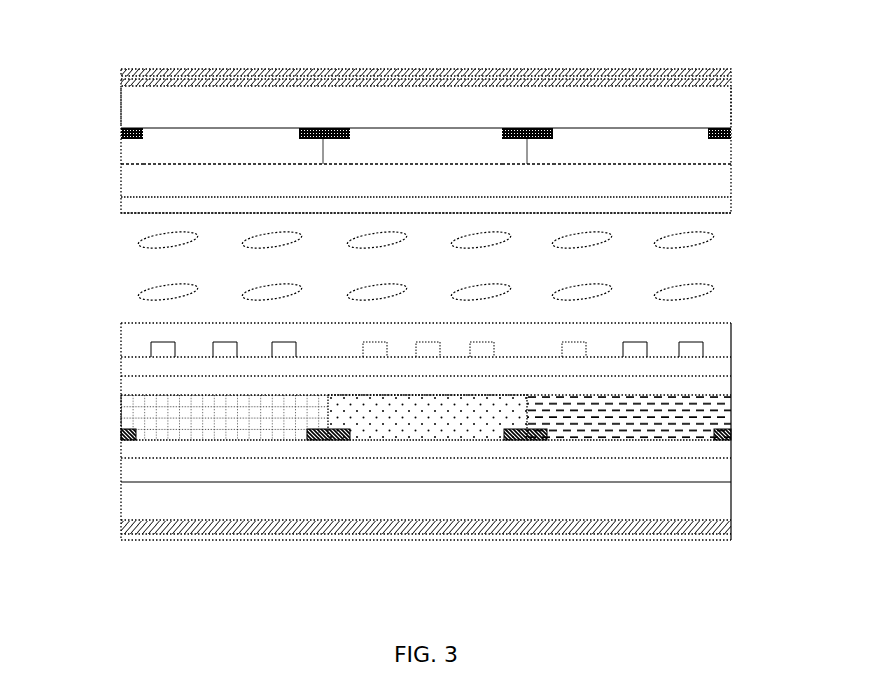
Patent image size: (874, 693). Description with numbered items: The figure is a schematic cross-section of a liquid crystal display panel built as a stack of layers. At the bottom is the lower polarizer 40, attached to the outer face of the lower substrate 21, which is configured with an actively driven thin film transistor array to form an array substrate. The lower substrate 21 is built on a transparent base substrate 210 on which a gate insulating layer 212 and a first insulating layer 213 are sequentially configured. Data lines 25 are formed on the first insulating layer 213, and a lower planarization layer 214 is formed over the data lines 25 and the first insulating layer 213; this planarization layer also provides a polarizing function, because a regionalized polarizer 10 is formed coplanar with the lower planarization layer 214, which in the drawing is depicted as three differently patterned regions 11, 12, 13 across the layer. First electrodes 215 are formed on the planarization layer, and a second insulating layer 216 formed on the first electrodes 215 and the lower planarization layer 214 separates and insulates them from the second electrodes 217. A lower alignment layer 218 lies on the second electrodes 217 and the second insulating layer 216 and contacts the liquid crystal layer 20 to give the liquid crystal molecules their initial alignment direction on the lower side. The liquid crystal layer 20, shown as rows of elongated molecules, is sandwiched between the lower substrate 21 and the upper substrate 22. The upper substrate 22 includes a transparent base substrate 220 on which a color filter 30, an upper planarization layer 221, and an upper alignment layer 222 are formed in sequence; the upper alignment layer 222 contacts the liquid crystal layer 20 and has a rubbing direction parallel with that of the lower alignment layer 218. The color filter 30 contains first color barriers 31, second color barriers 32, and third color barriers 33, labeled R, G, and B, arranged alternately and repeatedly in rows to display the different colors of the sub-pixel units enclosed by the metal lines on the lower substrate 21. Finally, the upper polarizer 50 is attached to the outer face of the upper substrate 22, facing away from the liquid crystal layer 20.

The regionalized polarizer 10 is at (493, 495).
The first light-emitting region (grid) 11 is at (183, 417).
The second light-emitting region (dots) 12 is at (400, 417).
The third light-emitting region (dashes) 13 is at (588, 420).
The liquid crystal layer 20 is at (117, 292).
The lower substrate 21 is at (117, 450).
The upper substrate 22 is at (108, 173).
The data lines 25 is at (322, 440).
The color filter 30 is at (707, 157).
The first color barriers 31 is at (266, 157).
The second color barriers 32 is at (418, 148).
The third color barriers 33 is at (599, 148).
The lower polarizer 40 is at (143, 533).
The upper polarizer 50 is at (144, 77).
The transparent base substrate 210 is at (700, 511).
The gate insulating layer 212 is at (690, 473).
The first insulating layer 213 is at (690, 453).
The lower planarization layer 214 is at (693, 432).
The first electrodes 215 is at (703, 393).
The second insulating layer 216 is at (713, 372).
The second electrodes 217 is at (688, 353).
The lower alignment layer 218 is at (646, 335).
The transparent base substrate 220 is at (708, 113).
The upper planarization layer 221 is at (703, 192).
The upper alignment layer 222 is at (703, 210).